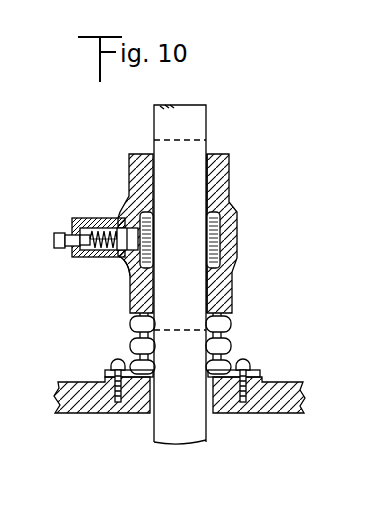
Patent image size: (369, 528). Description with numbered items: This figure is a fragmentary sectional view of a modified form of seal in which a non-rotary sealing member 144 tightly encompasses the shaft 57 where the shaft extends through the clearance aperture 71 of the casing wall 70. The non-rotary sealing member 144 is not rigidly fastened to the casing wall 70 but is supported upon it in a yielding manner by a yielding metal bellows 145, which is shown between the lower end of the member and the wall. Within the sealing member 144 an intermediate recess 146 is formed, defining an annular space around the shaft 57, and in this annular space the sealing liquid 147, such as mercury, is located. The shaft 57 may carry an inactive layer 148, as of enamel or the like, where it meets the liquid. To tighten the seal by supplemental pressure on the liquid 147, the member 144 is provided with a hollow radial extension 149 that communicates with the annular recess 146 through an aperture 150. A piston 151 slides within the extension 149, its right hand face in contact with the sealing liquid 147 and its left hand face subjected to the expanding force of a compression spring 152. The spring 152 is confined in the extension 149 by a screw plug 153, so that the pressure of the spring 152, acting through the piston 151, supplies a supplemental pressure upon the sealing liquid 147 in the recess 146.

The shaft 57 is at (197, 445).
The casing wall 70 is at (285, 405).
The clearance aperture 71 is at (213, 402).
The non-rotary sealing member 144 is at (229, 153).
The yielding metal bellows 145 is at (233, 346).
The intermediate recess 146 is at (215, 243).
The sealing liquid 147 is at (215, 216).
The inactive layer 148 is at (208, 178).
The radial extension 149 is at (105, 258).
The aperture 150 is at (128, 272).
The piston 151 is at (120, 228).
The compression spring 152 is at (92, 250).
The screw plug 153 is at (54, 242).